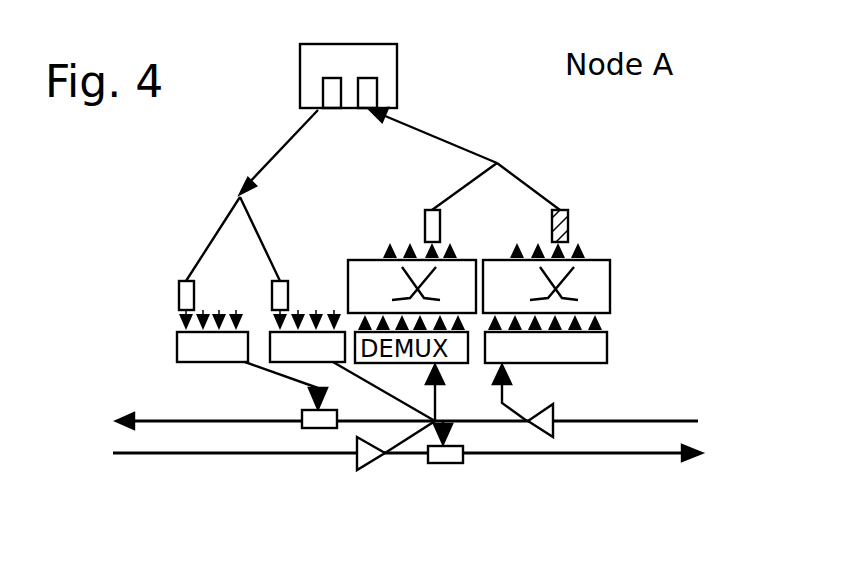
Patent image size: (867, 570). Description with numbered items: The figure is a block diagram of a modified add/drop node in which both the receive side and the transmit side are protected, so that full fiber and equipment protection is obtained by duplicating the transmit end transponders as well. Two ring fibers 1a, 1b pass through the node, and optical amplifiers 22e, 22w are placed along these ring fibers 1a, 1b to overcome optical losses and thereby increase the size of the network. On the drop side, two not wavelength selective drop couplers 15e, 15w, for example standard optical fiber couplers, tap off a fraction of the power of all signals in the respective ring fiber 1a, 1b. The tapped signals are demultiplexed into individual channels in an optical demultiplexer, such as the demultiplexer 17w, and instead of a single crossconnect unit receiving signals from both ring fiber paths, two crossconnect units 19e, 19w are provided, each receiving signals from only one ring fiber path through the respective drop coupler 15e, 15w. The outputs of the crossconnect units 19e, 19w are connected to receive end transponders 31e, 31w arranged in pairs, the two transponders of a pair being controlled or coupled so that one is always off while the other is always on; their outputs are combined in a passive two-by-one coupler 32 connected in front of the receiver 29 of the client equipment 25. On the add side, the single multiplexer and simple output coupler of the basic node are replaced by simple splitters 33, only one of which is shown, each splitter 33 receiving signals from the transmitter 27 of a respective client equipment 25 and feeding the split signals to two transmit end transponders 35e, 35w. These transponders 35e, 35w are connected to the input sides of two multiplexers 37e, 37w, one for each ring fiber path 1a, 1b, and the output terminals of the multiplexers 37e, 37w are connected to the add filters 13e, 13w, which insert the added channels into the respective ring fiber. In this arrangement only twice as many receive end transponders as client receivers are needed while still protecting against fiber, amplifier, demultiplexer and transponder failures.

The client equipment 25 is at (300, 58).
The transmitter 27 is at (300, 108).
The receiver 29 is at (380, 102).
The 2×1 passive coupler 32 is at (497, 163).
The simple splitter 33 is at (243, 200).
The TET (transmit end transponder) 35e is at (181, 280).
The TET (transmit end transponder) 35w is at (283, 280).
The multiplexer 37e is at (177, 350).
The multiplexer 37w is at (305, 362).
The RET (receive end transponder) 31e is at (426, 214).
The RET (receive end transponder) 31w is at (586, 236).
The crossconnect unit 19e is at (362, 268).
The crossconnect unit 19w is at (612, 283).
The optical demultiplexer 17w is at (607, 345).
The add filter 13e is at (305, 411).
The add filter 13w is at (448, 464).
The drop coupler 15e is at (390, 455).
The drop coupler 15w is at (519, 410).
The optical amplifier 22e is at (367, 470).
The optical amplifier 22w is at (556, 412).
The ring fiber 1a is at (675, 420).
The ring fiber 1b is at (655, 456).